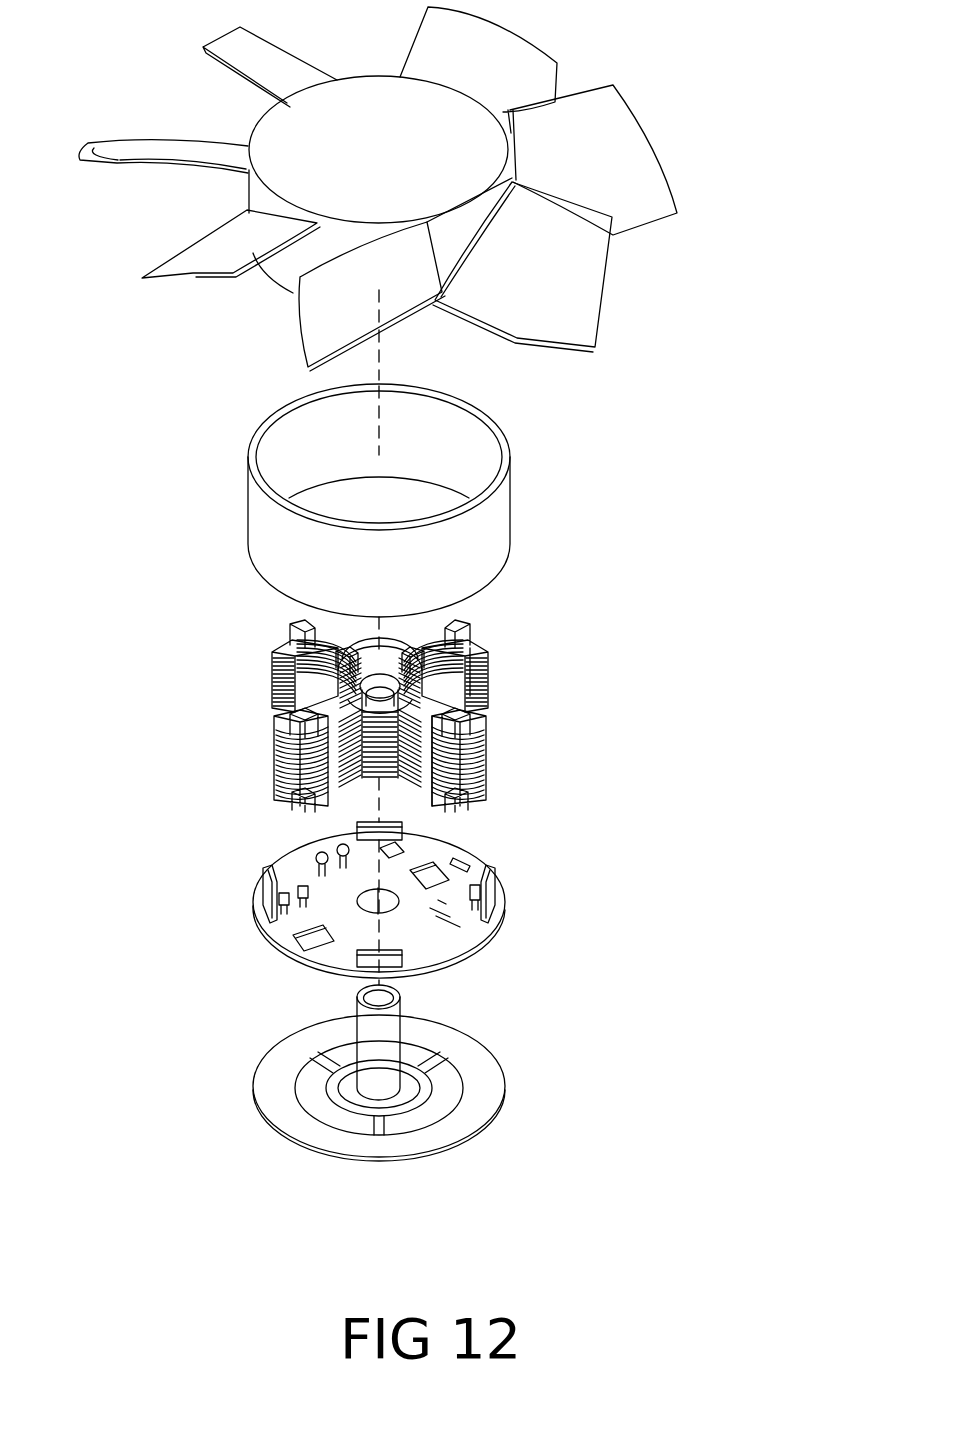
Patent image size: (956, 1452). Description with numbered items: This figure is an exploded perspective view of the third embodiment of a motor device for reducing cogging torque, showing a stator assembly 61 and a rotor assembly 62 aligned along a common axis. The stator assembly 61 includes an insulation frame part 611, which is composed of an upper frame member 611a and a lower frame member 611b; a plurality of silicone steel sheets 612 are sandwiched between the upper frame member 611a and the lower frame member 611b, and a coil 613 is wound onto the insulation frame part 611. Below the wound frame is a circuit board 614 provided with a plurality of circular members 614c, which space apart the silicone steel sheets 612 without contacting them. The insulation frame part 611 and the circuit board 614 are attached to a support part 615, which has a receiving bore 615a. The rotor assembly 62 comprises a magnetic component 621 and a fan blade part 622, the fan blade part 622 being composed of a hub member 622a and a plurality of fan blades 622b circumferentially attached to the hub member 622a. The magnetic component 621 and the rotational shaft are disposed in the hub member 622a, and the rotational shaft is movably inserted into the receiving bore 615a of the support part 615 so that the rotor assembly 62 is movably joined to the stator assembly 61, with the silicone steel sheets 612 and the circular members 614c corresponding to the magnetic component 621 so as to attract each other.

The stator assembly 61 is at (603, 628).
The insulation frame part 611 is at (110, 612).
The upper frame member 611a is at (283, 650).
The lower frame member 611b is at (283, 785).
The silicone steel sheets 612 is at (480, 767).
The coil 613 is at (477, 665).
The circuit board 614 is at (307, 863).
The circular members 614c is at (393, 833).
The support part 615 is at (503, 1049).
The receiving bore 615a is at (363, 1012).
The rotor assembly 62 is at (584, 70).
The magnetic component 621 is at (333, 450).
The fan blade part 622 is at (675, 164).
The hub member 622a is at (323, 142).
The fan blades 622b is at (633, 200).